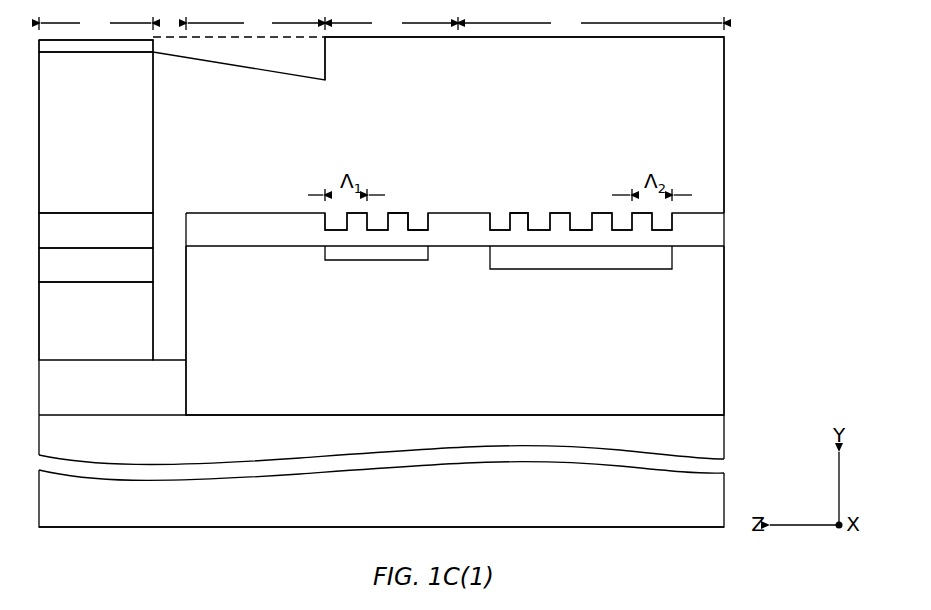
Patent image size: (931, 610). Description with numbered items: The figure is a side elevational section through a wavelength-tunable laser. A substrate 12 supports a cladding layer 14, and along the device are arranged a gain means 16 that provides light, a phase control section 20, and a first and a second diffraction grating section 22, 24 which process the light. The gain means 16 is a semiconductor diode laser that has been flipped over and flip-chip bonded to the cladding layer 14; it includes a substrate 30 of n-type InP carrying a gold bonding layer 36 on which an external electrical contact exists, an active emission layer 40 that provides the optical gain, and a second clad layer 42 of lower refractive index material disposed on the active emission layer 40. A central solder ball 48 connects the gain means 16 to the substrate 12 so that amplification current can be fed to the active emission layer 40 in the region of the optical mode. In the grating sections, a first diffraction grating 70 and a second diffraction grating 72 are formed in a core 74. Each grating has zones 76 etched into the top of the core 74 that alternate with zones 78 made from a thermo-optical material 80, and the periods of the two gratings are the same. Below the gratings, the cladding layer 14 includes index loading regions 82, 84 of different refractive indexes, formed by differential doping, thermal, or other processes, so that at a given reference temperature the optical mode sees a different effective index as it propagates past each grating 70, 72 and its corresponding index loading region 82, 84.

The substrate 12 is at (381, 471).
The cladding layer 14 is at (455, 330).
The gain means 16 is at (96, 23).
The phase control section 20 is at (255, 23).
The first diffraction grating section 22 is at (391, 23).
The second diffraction grating section 24 is at (591, 23).
The substrate 30 is at (96, 132).
The bonding layer 36 is at (45, 47).
The active emission layer 40 is at (96, 230).
The second clad layer 42 is at (96, 265).
The central solder ball 48 is at (96, 321).
The first diffraction grating 70 is at (325, 159).
The second diffraction grating 72 is at (672, 157).
The core 74 is at (718, 229).
The zones 76 is at (402, 218).
The zones 78 is at (418, 219).
The thermo-optical material 80 is at (524, 125).
The index loading region 82 is at (375, 262).
The index loading region 84 is at (565, 262).